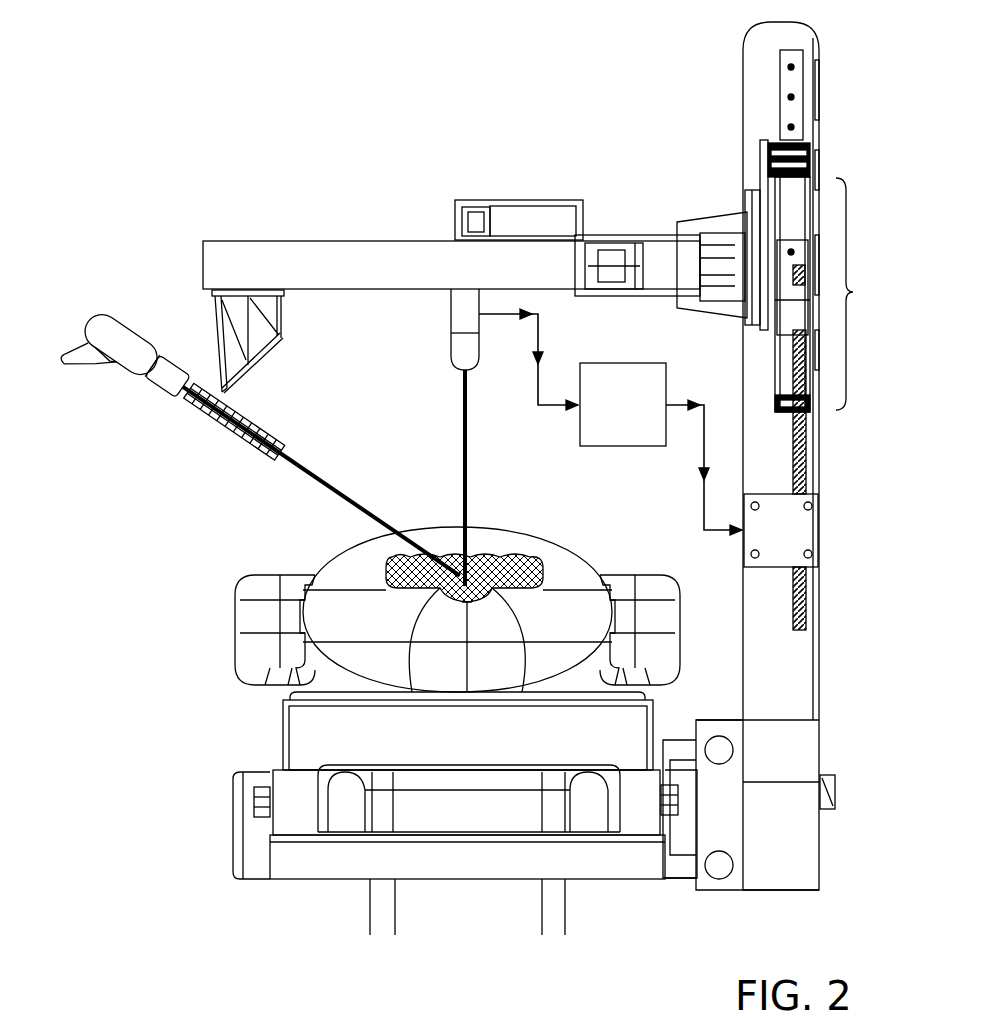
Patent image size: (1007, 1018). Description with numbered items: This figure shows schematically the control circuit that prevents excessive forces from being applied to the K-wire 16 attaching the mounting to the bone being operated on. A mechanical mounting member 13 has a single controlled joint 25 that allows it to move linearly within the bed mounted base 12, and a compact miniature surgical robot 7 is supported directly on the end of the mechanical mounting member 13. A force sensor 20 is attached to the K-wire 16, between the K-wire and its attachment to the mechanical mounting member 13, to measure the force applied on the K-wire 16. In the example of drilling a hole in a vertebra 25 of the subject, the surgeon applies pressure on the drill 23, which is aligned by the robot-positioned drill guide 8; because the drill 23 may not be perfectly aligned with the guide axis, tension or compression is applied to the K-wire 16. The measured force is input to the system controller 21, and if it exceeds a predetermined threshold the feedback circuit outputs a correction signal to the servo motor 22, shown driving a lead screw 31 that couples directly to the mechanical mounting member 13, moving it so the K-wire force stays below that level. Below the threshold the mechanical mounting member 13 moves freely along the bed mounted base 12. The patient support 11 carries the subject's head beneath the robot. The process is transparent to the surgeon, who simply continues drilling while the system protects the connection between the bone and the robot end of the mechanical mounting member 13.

The compact miniature surgical robot 7 is at (288, 322).
The drill guide 8 is at (212, 420).
The headrest / patient chair 11 is at (283, 736).
The bed mounted base 12 is at (820, 655).
The mechanical mounting member 13 is at (336, 240).
The K-wire 16 is at (462, 432).
The force sensor 20 is at (450, 314).
The system controller 21 is at (636, 448).
The servo motor 22 is at (812, 532).
The drill 23 is at (310, 492).
The vertebra 25 is at (520, 556).
The lead screw 31 is at (807, 590).